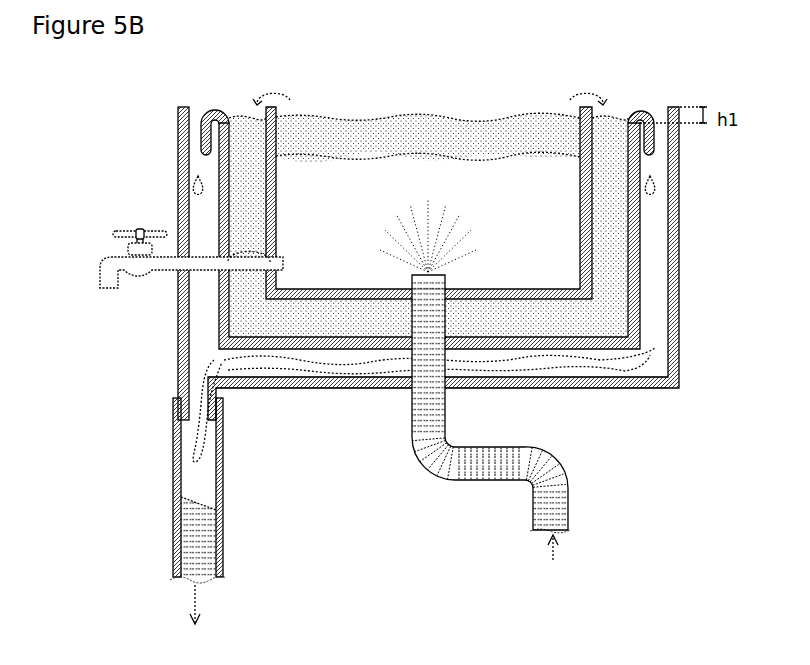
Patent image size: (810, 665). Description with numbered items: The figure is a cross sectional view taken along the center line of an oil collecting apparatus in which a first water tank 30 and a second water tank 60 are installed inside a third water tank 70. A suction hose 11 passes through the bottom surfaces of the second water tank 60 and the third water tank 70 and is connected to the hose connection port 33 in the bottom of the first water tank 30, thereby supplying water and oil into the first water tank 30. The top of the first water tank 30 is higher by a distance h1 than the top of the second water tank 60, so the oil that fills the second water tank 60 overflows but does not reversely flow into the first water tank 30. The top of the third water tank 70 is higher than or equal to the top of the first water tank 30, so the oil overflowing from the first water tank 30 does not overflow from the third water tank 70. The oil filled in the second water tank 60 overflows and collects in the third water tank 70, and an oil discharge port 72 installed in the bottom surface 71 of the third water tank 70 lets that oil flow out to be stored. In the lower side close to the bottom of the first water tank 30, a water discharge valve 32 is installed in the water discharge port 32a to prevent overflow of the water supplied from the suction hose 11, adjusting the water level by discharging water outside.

The suction hose 11 is at (428, 463).
The first water tank 30 is at (594, 174).
The water discharge valve 32 is at (98, 270).
The water discharge port 32a is at (232, 260).
The hose connection port 33 is at (457, 292).
The second water tank 60 is at (632, 205).
The third water tank 70 is at (680, 246).
The bottom surface 71 is at (623, 390).
The oil discharge port 72 is at (178, 392).